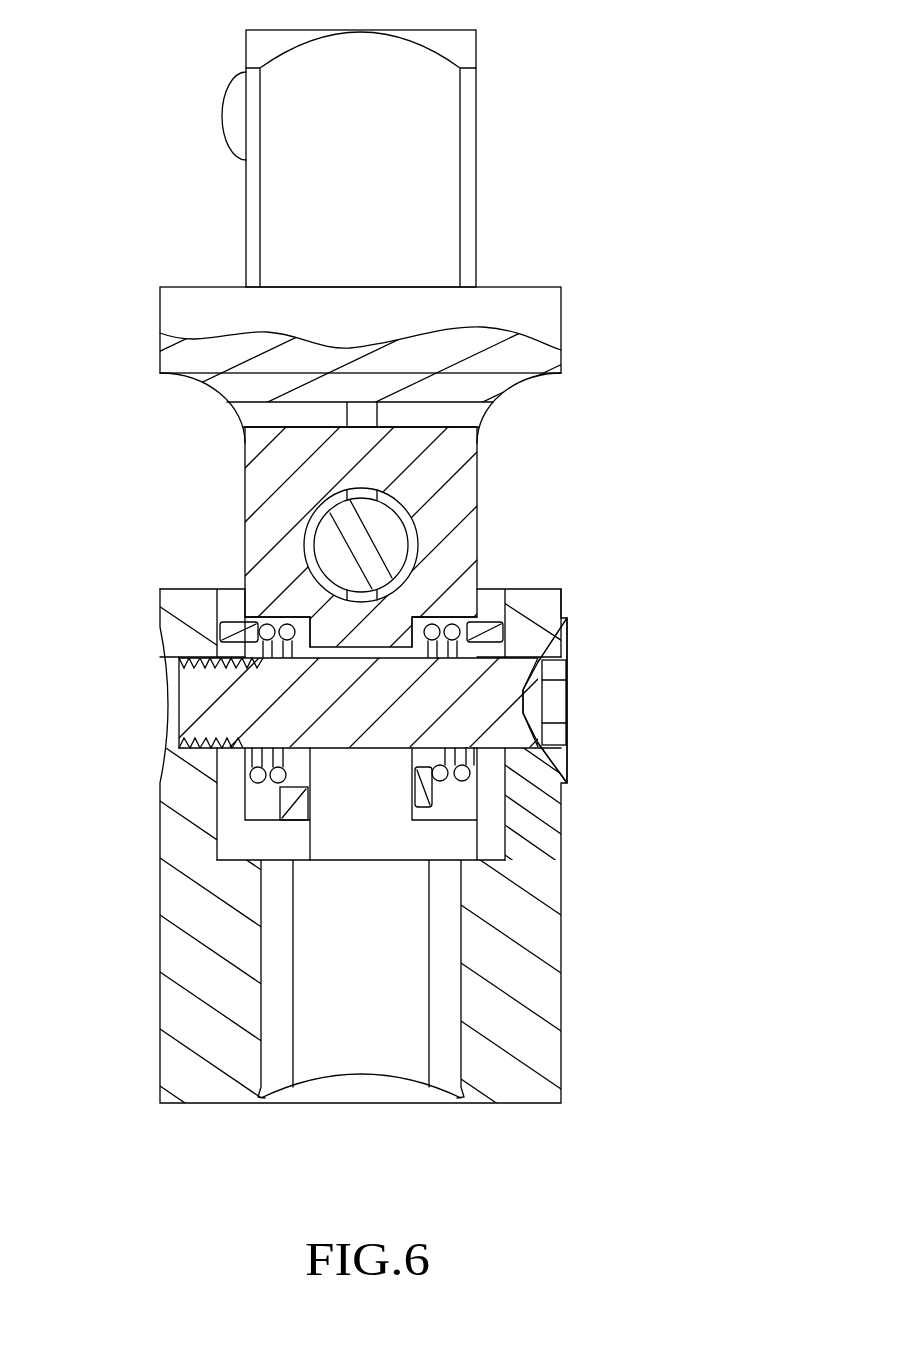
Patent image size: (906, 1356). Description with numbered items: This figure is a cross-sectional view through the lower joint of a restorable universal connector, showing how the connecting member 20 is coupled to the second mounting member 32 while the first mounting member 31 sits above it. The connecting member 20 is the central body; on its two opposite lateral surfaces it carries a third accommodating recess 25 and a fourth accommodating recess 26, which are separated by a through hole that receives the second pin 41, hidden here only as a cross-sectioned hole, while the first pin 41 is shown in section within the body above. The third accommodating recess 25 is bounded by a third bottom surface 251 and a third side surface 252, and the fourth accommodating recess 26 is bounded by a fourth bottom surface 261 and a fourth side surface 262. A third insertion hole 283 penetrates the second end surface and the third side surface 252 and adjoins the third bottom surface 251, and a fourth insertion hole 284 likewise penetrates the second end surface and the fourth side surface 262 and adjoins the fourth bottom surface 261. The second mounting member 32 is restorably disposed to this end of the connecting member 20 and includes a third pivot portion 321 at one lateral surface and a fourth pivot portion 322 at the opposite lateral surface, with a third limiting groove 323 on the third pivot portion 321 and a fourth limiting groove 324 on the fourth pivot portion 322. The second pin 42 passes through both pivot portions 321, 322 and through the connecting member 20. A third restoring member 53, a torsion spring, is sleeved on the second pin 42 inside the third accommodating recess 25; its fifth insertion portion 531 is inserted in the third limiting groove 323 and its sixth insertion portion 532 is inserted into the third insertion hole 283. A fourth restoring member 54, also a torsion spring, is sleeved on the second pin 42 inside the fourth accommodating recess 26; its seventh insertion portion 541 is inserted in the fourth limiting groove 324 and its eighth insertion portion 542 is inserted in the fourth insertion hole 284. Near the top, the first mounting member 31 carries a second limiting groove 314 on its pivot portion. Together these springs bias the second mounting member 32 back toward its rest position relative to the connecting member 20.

The connecting member 20 is at (479, 471).
The third accommodating recess 25 is at (413, 627).
The fourth accommodating recess 26 is at (303, 625).
The first mounting member 31 is at (478, 136).
The second mounting member 32 is at (160, 1060).
The first pin 41 is at (327, 535).
The second pin 42 is at (558, 759).
The third restoring member 53 is at (481, 778).
The fourth restoring member 54 is at (238, 777).
The third bottom surface 251 is at (528, 706).
The third side surface 252 is at (545, 666).
The fourth bottom surface 261 is at (240, 745).
The fourth side surface 262 is at (262, 657).
The third insertion hole 283 is at (290, 820).
The fourth insertion hole 284 is at (427, 813).
The second limiting groove 314 is at (358, 412).
The third pivot portion 321 is at (537, 869).
The fourth pivot portion 322 is at (183, 868).
The third limiting groove 323 is at (490, 595).
The fourth limiting groove 324 is at (230, 606).
The fifth insertion portion 531 is at (500, 621).
The sixth insertion portion 532 is at (437, 790).
The seventh insertion portion 541 is at (248, 628).
The eighth insertion portion 542 is at (297, 808).